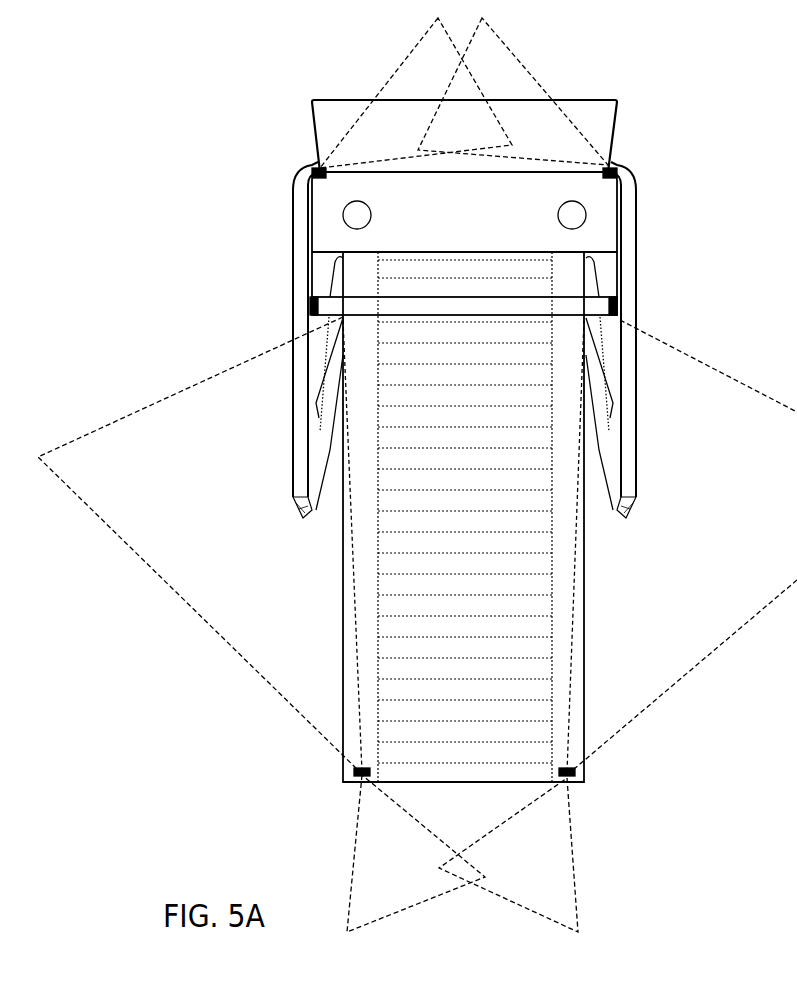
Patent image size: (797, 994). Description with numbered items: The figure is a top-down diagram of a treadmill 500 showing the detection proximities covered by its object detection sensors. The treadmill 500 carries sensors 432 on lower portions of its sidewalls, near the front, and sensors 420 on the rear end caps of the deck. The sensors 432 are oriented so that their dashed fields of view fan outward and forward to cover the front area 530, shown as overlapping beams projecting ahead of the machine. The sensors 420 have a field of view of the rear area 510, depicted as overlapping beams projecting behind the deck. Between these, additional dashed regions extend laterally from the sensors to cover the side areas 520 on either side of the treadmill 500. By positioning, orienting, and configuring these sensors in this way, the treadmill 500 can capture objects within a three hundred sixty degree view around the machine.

The front area 530 is at (548, 90).
The treadmill 500 is at (637, 257).
The sensors 432 is at (300, 175).
The side areas 520 is at (168, 398).
The sensors 420 is at (347, 772).
The rear area 510 is at (575, 857).